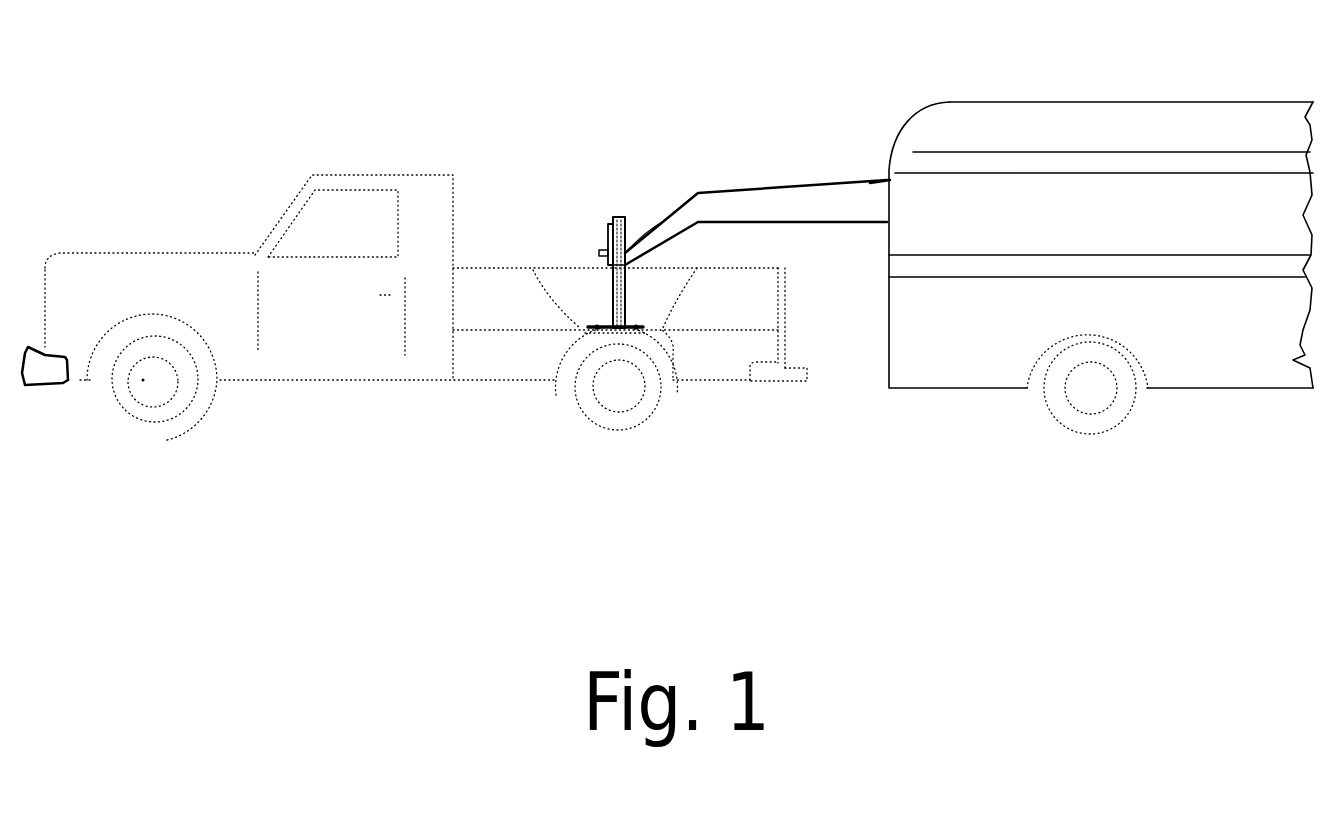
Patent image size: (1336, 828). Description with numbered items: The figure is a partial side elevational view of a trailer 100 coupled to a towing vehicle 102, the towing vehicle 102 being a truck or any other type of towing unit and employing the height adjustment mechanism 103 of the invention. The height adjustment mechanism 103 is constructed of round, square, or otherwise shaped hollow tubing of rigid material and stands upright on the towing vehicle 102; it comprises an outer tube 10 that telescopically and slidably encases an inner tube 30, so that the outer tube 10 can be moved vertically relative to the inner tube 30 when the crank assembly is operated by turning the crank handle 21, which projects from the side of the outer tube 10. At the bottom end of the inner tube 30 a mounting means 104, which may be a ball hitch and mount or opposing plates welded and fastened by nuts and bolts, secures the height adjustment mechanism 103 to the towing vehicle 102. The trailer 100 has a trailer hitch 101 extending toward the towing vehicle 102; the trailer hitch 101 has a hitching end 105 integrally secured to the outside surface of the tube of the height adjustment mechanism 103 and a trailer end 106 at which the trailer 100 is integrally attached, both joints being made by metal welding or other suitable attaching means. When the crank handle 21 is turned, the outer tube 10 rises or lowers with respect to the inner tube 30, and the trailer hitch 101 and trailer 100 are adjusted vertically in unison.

The outer tube 10 is at (618, 217).
The crank handle 21 is at (608, 240).
The inner tube 30 is at (613, 287).
The trailer 100 is at (1078, 102).
The trailer hitch 101 is at (800, 202).
The towing vehicle 102 is at (152, 265).
The height adjustment mechanism 103 is at (612, 222).
The mounting means 104 is at (610, 326).
The hitching end 105 is at (627, 257).
The trailer end 106 is at (887, 195).